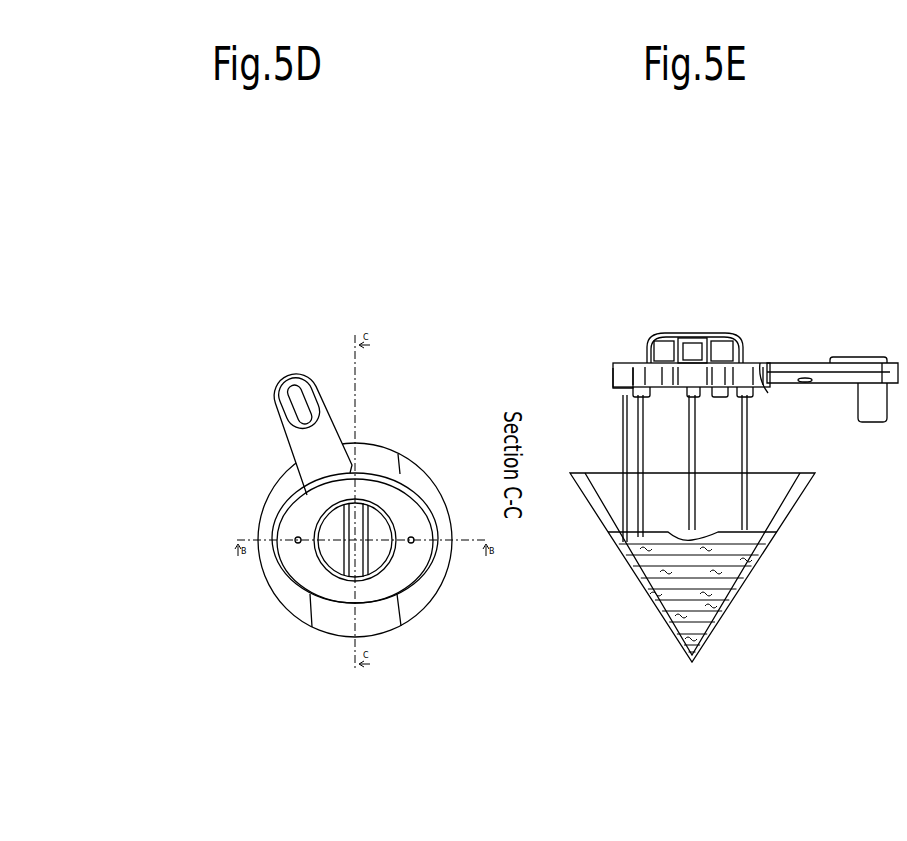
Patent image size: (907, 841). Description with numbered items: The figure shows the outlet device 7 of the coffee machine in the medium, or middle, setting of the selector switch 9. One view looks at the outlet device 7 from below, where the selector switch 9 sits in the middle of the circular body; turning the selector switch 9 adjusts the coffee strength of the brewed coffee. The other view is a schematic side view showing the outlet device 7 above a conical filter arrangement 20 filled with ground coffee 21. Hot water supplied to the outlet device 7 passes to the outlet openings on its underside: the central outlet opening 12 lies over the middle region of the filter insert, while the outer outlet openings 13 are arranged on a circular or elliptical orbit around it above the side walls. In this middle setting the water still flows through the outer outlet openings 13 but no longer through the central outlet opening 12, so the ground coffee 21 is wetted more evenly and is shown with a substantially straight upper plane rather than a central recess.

In FIG. 5D, the outlet device 7 is at (298, 521).
In FIG. 5E, the outlet device 7 is at (670, 357).
In FIG. 5D, the selector switch 9 is at (372, 570).
In FIG. 5E, the central outlet opening 12 is at (723, 357).
In FIG. 5E, the outer outlet openings 13 is at (612, 375).
In FIG. 5E, the conical vessel 20 is at (793, 510).
In FIG. 5E, the ground coffee 21 is at (700, 623).